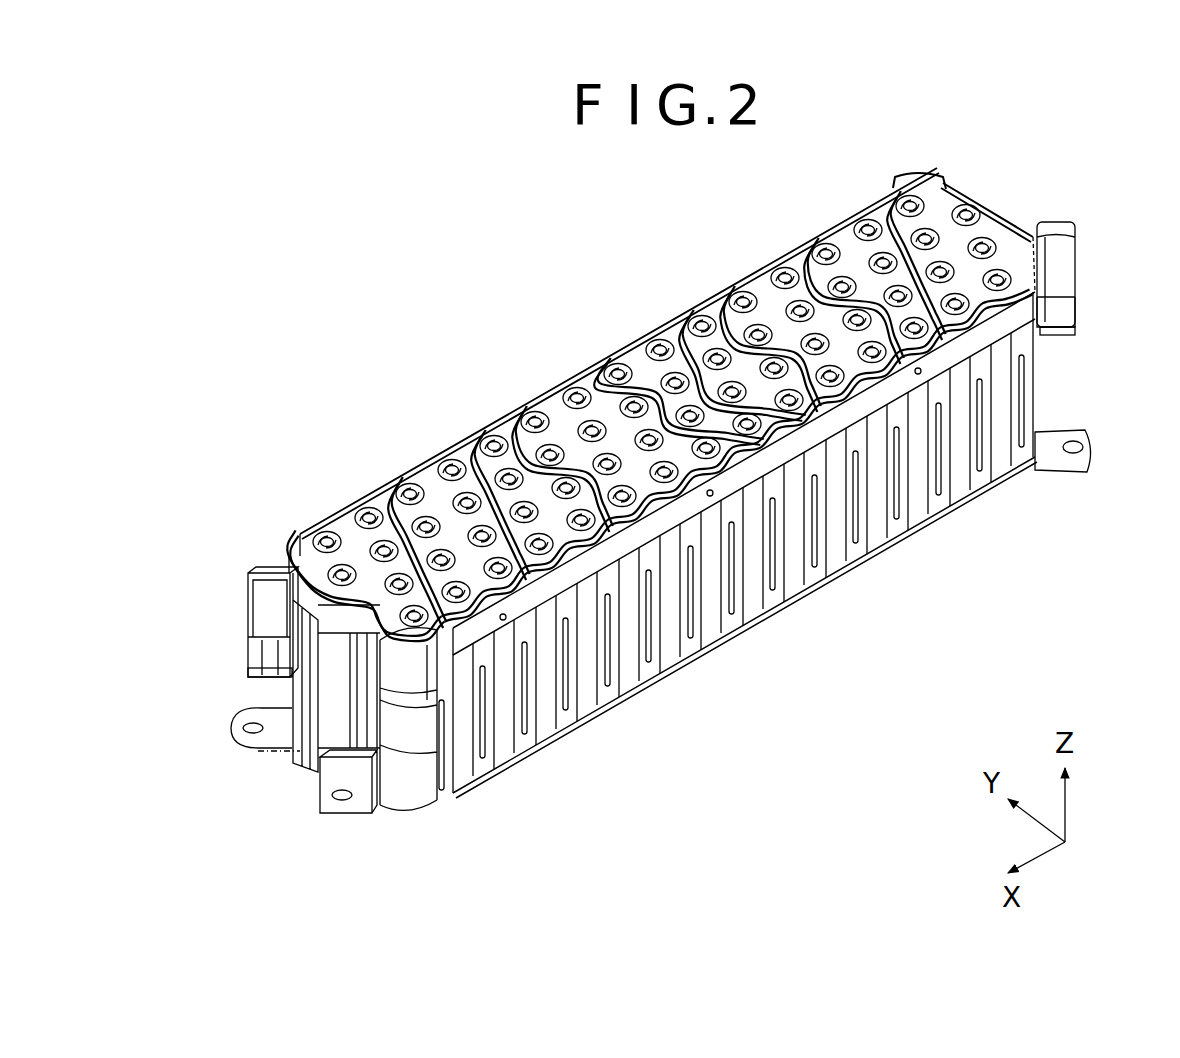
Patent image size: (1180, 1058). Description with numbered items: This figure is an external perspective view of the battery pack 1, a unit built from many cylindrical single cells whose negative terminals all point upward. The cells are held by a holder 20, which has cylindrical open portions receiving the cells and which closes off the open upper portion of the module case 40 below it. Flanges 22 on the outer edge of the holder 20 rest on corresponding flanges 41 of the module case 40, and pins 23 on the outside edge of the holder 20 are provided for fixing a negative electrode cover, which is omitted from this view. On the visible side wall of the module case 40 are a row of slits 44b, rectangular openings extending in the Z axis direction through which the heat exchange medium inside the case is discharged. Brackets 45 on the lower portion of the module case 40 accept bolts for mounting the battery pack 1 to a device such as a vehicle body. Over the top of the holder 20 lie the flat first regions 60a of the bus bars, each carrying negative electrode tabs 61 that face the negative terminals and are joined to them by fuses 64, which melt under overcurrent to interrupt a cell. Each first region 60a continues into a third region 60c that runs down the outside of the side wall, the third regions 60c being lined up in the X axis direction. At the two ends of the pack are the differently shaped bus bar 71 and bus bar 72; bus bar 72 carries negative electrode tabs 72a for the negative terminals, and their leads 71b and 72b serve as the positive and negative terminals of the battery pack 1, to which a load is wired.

The battery pack 1 is at (1052, 176).
The holder 20 is at (337, 622).
The flange 22 is at (1075, 298).
The pin 23 is at (922, 371).
The module case 40 is at (337, 713).
The flange 41 is at (1075, 331).
The slit 44b is at (441, 775).
The bracket 45 is at (233, 733).
The first region 60a is at (840, 237).
The third region 60c is at (463, 742).
The negative electrode tab 61 is at (860, 222).
The fuse 64 is at (358, 530).
The bus bar 71 is at (420, 815).
The lead 71b is at (298, 746).
The bus bar 72 is at (955, 240).
The negative electrode tab 72a is at (938, 228).
The lead 72b is at (1077, 233).